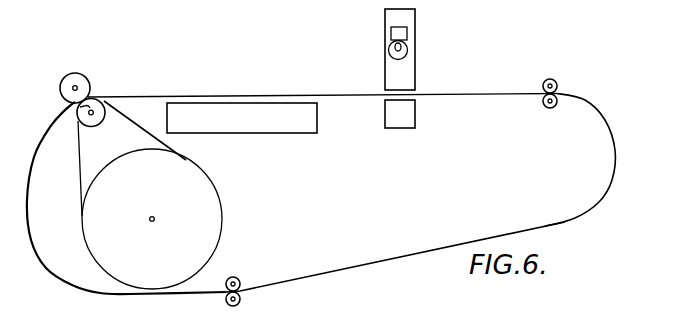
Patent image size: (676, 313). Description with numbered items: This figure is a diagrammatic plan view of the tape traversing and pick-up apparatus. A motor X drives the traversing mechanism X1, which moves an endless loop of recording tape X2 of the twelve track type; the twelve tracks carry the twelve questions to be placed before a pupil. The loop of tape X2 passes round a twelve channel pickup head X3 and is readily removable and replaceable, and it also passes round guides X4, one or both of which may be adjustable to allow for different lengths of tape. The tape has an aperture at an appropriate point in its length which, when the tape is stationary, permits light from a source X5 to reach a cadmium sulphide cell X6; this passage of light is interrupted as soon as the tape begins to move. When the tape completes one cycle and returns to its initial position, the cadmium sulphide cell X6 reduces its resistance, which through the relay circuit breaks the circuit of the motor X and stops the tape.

The motor X is at (158, 203).
The traversing mechanism X1 is at (66, 93).
The endless loop of recording tape X2 is at (447, 82).
The twelve channel pickup head X3 is at (255, 133).
The guides X4 is at (259, 268).
The light source X5 is at (408, 49).
The cadmium sulphide cell X6 is at (416, 117).